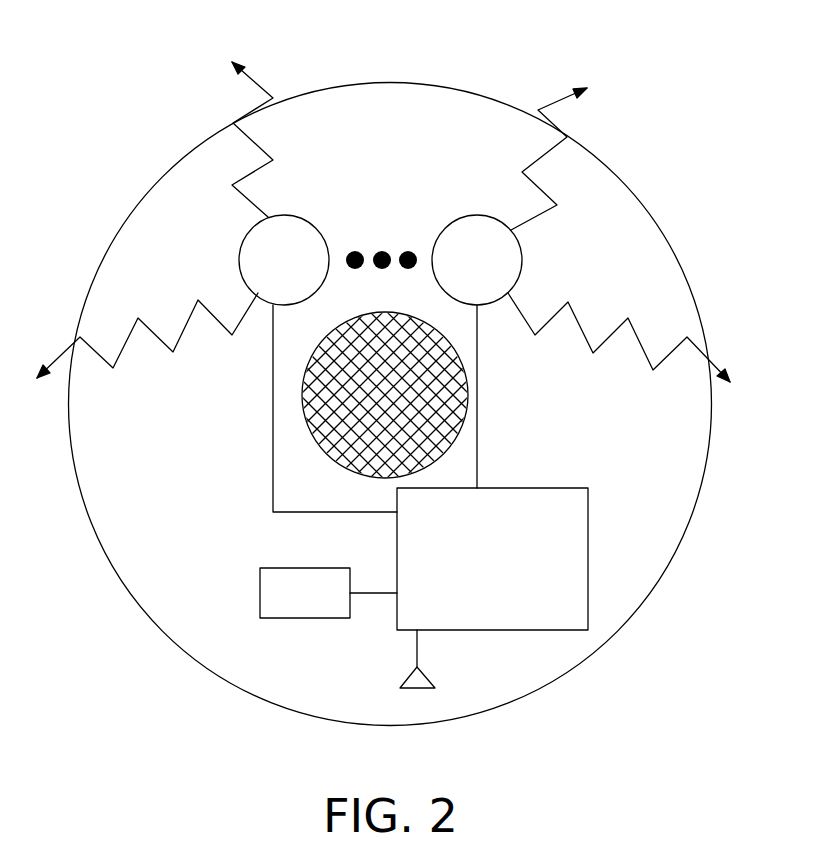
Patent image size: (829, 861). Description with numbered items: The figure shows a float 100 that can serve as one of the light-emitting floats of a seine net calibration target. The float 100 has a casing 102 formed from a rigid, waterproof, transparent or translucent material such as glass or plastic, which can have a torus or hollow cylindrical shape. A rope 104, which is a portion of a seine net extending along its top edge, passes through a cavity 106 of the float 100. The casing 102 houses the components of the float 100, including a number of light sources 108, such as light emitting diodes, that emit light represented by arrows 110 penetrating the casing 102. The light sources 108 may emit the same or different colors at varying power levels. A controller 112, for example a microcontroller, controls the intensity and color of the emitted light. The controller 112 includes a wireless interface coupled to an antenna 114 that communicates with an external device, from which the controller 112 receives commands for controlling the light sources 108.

The float 100 is at (390, 391).
The casing 102 is at (405, 82).
The rope 104 is at (400, 408).
The cavity 106 is at (381, 395).
The light sources 108 is at (305, 274).
The arrows 110 is at (258, 78).
The controller 112 is at (503, 612).
The antenna 114 is at (260, 597).